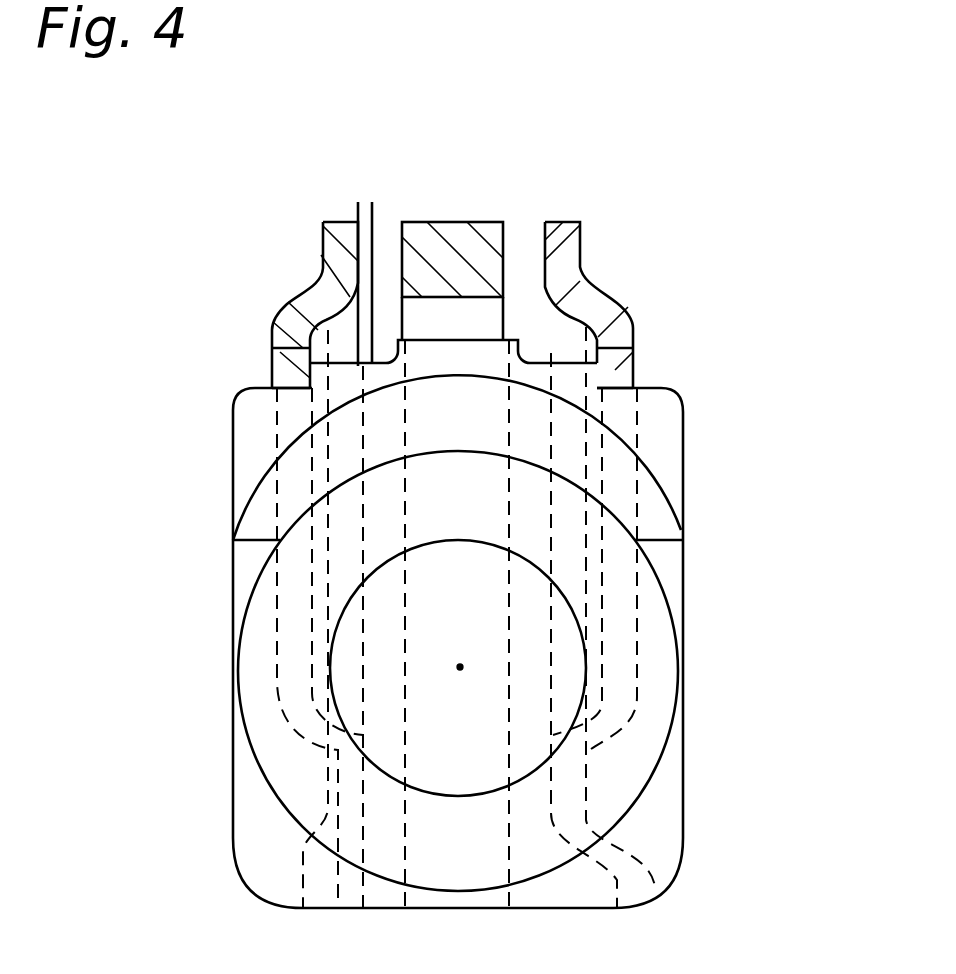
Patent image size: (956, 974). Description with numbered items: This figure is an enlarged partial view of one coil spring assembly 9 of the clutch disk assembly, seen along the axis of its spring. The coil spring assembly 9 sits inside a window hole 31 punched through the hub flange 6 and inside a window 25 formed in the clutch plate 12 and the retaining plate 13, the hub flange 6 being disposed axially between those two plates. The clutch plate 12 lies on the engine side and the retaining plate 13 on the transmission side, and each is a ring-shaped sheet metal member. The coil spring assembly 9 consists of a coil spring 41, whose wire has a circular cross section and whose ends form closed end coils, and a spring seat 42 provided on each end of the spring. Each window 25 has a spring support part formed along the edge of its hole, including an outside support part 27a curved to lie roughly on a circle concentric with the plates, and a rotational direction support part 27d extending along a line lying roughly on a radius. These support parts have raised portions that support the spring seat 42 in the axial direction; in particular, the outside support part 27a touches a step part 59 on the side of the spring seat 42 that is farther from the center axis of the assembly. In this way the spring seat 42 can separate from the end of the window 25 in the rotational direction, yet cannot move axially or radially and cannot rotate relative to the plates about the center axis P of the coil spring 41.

The hub flange 6 is at (445, 258).
The coil spring assembly 9 is at (704, 633).
The clutch plate 12 is at (340, 268).
The retaining plate 13 is at (563, 258).
The window 25 is at (215, 401).
The outside support part 27a is at (287, 373).
The rotational direction support part 27d is at (278, 673).
The window hole 31 is at (453, 328).
The coil spring 41 is at (653, 613).
The spring seat 42 is at (705, 407).
The step part 59 is at (283, 368).
The center axis P is at (460, 668).